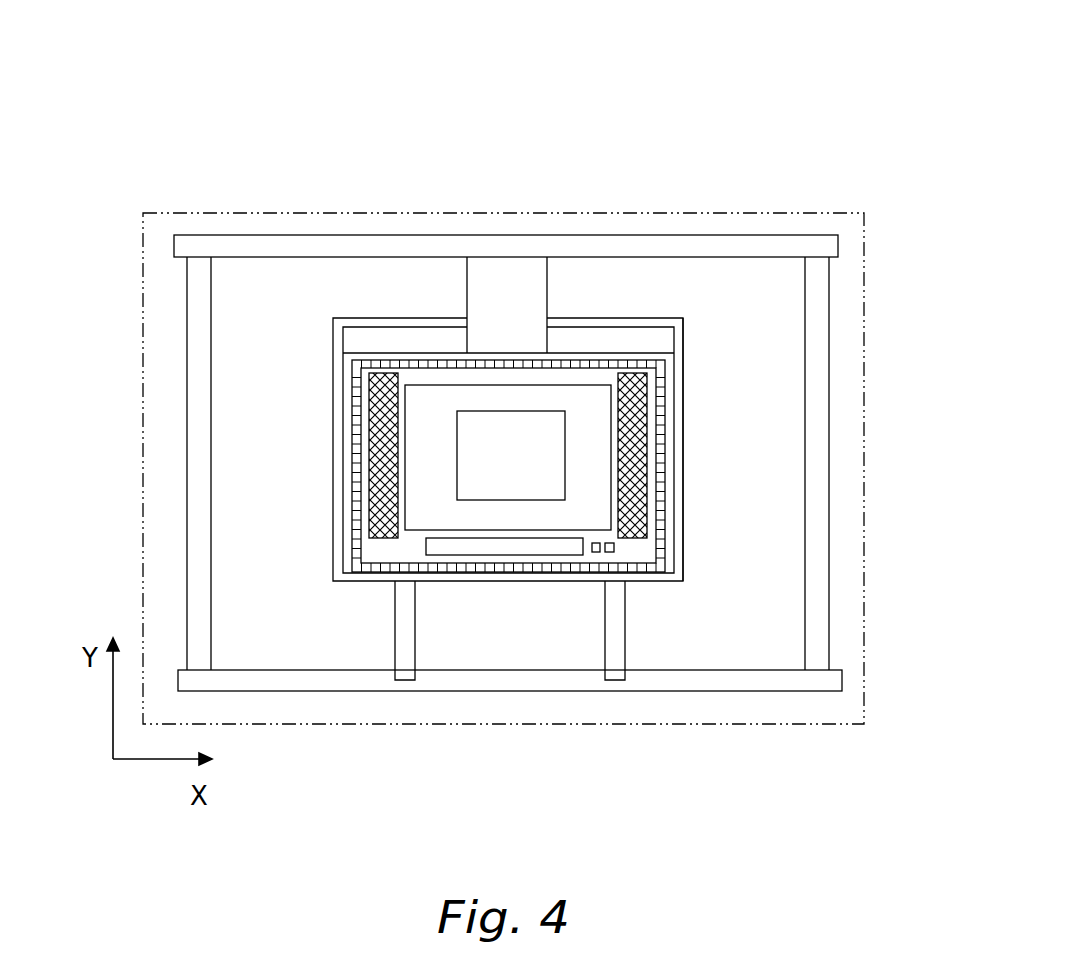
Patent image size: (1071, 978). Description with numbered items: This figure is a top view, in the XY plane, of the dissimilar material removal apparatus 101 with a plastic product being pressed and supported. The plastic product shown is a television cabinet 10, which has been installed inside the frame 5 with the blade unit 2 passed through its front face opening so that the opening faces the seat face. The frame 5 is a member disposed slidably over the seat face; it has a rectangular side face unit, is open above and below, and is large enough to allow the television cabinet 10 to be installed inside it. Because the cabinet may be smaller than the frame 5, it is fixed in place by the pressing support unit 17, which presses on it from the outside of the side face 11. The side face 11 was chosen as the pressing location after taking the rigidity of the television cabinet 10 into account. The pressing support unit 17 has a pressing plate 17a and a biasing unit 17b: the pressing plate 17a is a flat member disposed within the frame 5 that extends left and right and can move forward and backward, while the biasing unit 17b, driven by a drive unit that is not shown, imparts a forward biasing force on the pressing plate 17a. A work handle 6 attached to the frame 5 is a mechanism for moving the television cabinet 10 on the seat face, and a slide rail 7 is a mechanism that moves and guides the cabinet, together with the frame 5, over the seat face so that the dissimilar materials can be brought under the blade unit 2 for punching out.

The dissimilar material removal apparatus 101 is at (208, 212).
The blade unit 2 is at (479, 433).
The frame 5 is at (685, 353).
The work handle 6 is at (618, 657).
The slide rail 7 is at (200, 482).
The television cabinet 10 is at (385, 360).
The side face 11 is at (647, 357).
The pressing support unit 17 is at (693, 120).
The pressing plate 17a is at (592, 355).
The biasing unit 17b is at (490, 298).